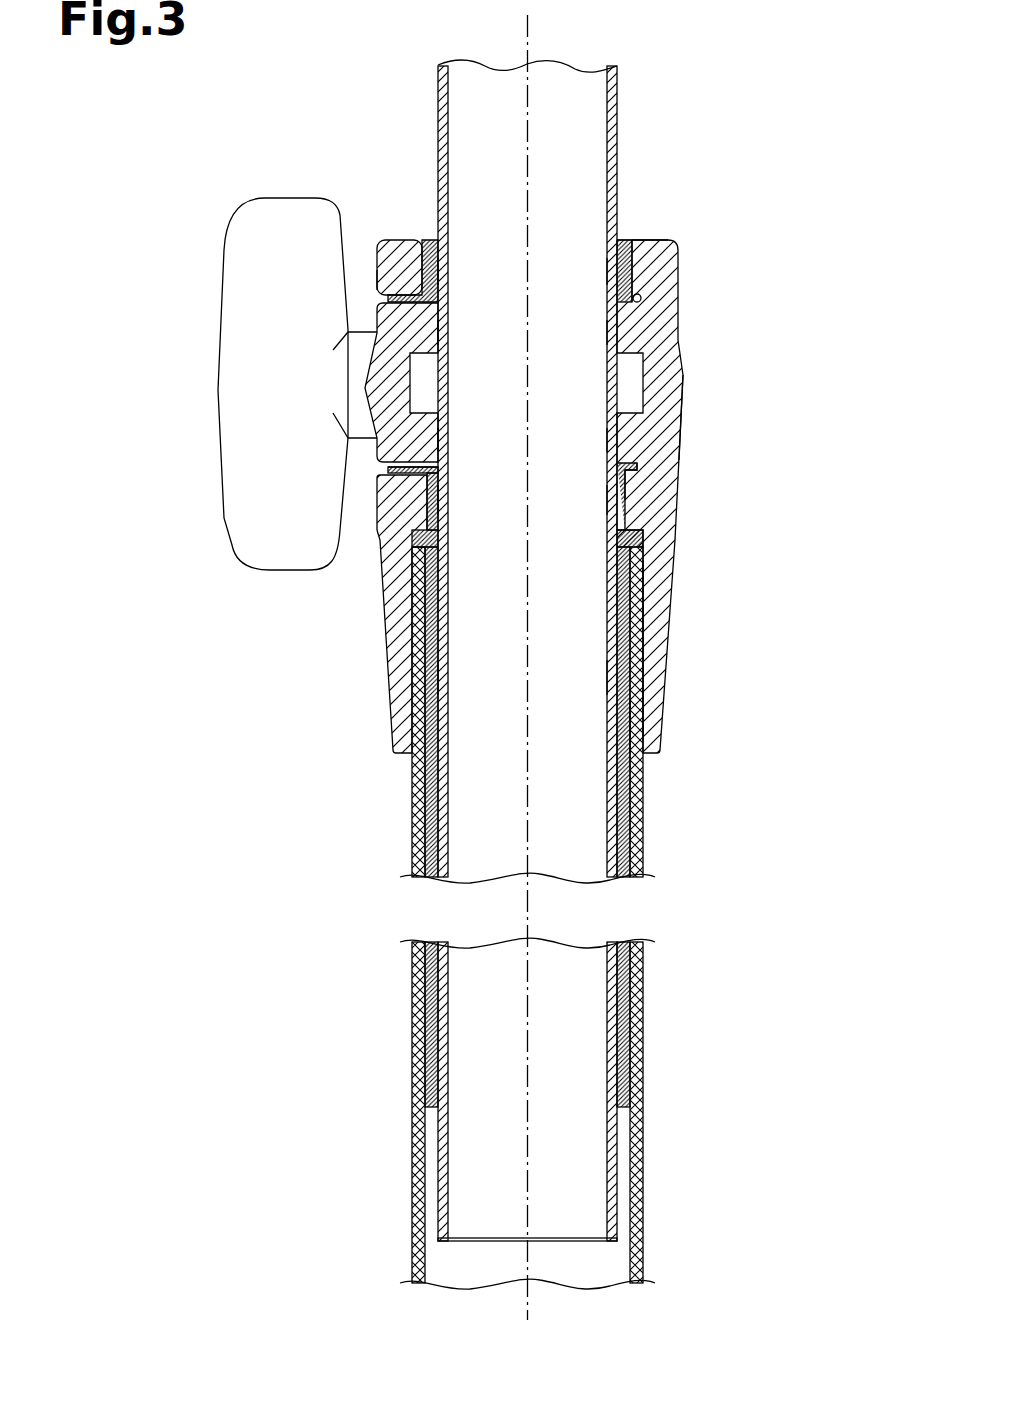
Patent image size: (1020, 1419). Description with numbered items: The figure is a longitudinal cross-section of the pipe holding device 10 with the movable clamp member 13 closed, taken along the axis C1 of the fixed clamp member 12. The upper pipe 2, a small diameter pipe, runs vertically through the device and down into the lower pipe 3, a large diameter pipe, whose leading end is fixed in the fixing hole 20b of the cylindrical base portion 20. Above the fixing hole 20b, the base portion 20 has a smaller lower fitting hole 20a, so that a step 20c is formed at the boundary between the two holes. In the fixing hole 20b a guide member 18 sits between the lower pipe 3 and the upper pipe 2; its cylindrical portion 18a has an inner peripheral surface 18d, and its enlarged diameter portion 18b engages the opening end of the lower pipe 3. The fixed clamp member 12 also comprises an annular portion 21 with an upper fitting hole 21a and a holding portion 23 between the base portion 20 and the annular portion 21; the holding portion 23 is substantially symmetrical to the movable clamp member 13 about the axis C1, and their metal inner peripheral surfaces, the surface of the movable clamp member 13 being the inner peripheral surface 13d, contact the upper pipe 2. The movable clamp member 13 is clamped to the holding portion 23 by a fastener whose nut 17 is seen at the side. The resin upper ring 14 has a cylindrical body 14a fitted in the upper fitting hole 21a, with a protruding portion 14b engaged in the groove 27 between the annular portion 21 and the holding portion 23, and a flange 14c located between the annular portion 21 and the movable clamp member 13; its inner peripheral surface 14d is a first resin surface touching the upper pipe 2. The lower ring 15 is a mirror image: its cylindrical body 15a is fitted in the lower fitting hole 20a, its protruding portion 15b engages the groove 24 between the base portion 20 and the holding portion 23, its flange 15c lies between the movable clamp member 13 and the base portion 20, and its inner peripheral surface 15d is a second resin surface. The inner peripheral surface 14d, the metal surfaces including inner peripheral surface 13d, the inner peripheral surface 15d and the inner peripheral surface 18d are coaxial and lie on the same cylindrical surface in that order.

The pipe holding device 10 is at (843, 212).
The upper pipe 2 is at (631, 708).
The lower pipe 3 is at (618, 813).
The fixed clamp member 12 is at (684, 342).
The movable clamp member 13 is at (366, 390).
The inner peripheral surface 13d is at (440, 332).
The upper ring 14 is at (597, 283).
The cylindrical body 14a is at (666, 260).
The protruding portion 14b is at (408, 250).
The flange 14c is at (383, 297).
The inner peripheral surface 14d is at (440, 270).
The lower ring 15 is at (591, 496).
The cylindrical body 15a is at (626, 482).
The protruding portion 15b is at (630, 452).
The flange 15c is at (388, 470).
The inner peripheral surface 15d is at (440, 500).
The nut 17 is at (225, 518).
The guide member 18 is at (633, 1025).
The cylindrical portion 18a is at (632, 966).
The enlarged diameter portion 18b is at (412, 548).
The inner peripheral surface 18d is at (440, 678).
The base portion 20 is at (675, 652).
The lower fitting hole 20a is at (627, 518).
The fixing hole 20b is at (640, 605).
The step 20c is at (637, 529).
The annular portion 21 is at (663, 238).
The upper fitting hole 21a is at (630, 240).
The holding portion 23 is at (686, 382).
The groove 24 is at (626, 468).
The groove 27 is at (642, 300).
The axis C1 is at (529, 33).